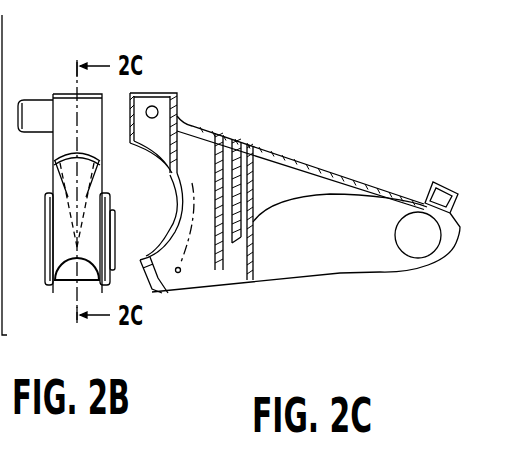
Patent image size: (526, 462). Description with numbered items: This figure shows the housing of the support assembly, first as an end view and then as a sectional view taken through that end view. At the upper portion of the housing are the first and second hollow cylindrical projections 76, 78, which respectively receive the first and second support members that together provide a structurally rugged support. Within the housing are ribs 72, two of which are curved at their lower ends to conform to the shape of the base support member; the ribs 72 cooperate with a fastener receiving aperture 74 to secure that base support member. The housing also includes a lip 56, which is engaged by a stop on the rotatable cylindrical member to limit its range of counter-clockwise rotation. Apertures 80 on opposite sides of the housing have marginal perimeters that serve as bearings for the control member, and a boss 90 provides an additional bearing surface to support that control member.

In FIG. 2C, the lip 56 is at (458, 237).
In FIG. 2C, the ribs 72 is at (215, 285).
In FIG. 2C, the fastener receiving aperture 74 is at (178, 274).
In FIG. 2B, the first hollow cylindrical projection 76 is at (62, 97).
In FIG. 2B, the second hollow cylindrical projection 78 is at (33, 107).
In FIG. 2C, the apertures 80 is at (415, 252).
In FIG. 2B, the boss 90 is at (110, 212).